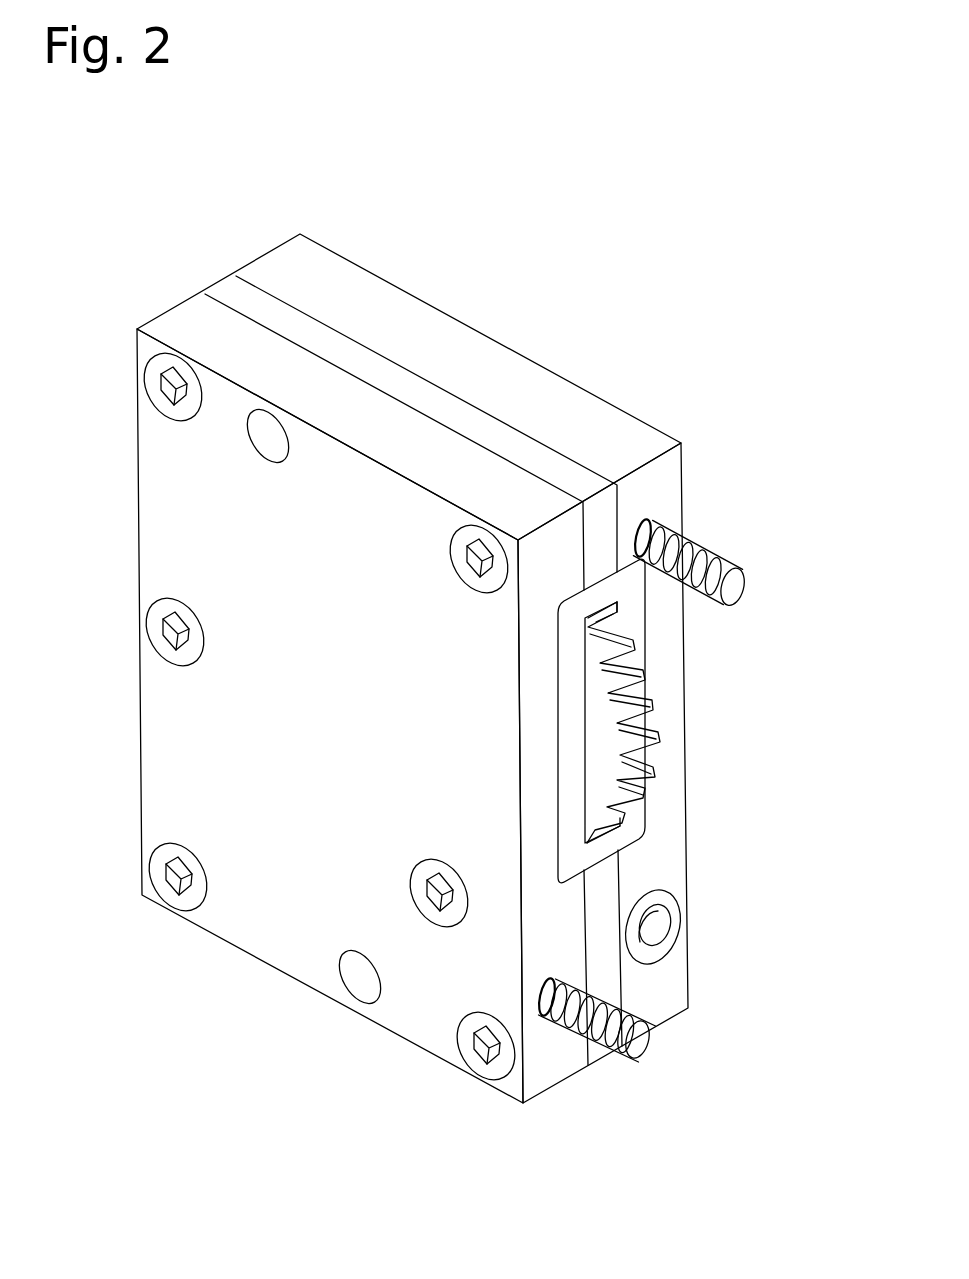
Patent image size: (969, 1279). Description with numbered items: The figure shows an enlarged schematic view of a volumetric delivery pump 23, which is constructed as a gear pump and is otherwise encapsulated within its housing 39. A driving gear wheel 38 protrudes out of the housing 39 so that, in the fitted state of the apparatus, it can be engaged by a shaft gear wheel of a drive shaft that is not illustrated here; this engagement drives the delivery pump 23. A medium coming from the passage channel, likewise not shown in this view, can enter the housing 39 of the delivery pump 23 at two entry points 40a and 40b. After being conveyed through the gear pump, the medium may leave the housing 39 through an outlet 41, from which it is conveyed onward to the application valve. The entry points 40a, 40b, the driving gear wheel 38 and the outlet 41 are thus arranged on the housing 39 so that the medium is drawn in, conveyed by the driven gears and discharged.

The delivery pump 23 is at (556, 326).
The housing 39 is at (308, 263).
The driving gear wheel 38 is at (600, 735).
The entry point 40a is at (620, 613).
The entry point 40b is at (620, 836).
The outlet 41 is at (657, 925).